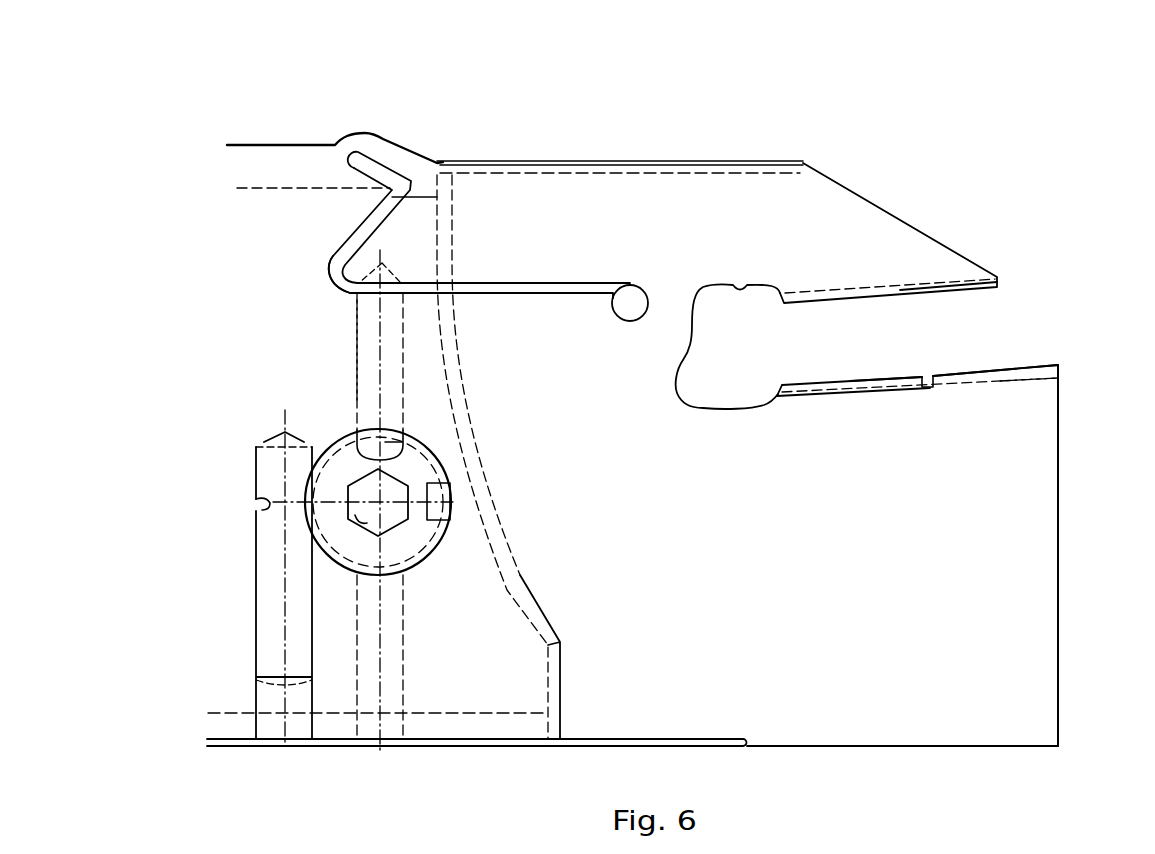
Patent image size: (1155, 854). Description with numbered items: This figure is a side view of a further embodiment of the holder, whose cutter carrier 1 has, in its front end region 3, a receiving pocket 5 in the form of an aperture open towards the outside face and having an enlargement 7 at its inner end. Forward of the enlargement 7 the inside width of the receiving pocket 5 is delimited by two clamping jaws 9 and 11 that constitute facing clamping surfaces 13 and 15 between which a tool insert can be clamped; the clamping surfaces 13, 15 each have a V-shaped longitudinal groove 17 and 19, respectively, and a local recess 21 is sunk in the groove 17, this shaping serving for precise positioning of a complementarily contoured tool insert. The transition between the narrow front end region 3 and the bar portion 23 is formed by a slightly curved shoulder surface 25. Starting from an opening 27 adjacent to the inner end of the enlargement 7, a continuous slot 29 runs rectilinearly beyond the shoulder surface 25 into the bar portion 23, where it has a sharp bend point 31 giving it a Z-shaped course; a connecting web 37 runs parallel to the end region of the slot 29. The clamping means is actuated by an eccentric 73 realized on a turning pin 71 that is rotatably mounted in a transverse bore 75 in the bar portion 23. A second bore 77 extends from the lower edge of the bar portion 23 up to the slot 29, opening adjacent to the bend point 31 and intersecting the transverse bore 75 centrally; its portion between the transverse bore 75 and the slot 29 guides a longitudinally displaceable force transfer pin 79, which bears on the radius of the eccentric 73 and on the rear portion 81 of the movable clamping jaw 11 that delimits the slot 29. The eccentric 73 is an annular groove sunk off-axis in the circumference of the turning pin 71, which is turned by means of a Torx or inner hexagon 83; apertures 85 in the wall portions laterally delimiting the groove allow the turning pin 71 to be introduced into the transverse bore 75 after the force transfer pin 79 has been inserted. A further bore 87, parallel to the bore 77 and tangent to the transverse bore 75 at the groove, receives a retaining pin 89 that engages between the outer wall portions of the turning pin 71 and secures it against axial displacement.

The cutter carrier 1 is at (235, 642).
The front end region 3 is at (807, 670).
The receiving pocket 5 is at (803, 342).
The enlargement 7 is at (740, 287).
The clamping jaw 9 is at (943, 418).
The movable clamping jaw 11 is at (873, 250).
The clamping surface 13 is at (927, 373).
The clamping surface 15 is at (953, 308).
The V-shaped longitudinal groove 17 is at (1060, 370).
The V-shaped longitudinal groove 19 is at (933, 287).
The local recess 21 is at (900, 390).
The bar portion 23 is at (265, 227).
The shoulder surface 25 is at (497, 527).
The opening 27 is at (628, 293).
The slot 29 is at (515, 290).
The sharp bend point 31 is at (328, 262).
The connecting web 37 is at (387, 153).
The turning pin 71 is at (347, 477).
The eccentric 73 is at (420, 447).
The transverse bore 75 is at (420, 525).
The second bore 77 is at (365, 657).
The force transfer pin 79 is at (358, 335).
The rear portion 81 is at (393, 270).
The inner hexagon 83 is at (363, 522).
The apertures 85 is at (440, 520).
The further bore 87 is at (258, 690).
The retaining pin 89 is at (265, 510).